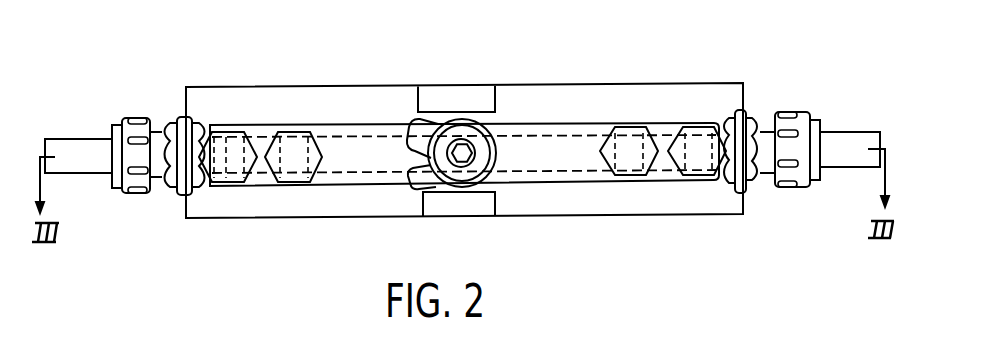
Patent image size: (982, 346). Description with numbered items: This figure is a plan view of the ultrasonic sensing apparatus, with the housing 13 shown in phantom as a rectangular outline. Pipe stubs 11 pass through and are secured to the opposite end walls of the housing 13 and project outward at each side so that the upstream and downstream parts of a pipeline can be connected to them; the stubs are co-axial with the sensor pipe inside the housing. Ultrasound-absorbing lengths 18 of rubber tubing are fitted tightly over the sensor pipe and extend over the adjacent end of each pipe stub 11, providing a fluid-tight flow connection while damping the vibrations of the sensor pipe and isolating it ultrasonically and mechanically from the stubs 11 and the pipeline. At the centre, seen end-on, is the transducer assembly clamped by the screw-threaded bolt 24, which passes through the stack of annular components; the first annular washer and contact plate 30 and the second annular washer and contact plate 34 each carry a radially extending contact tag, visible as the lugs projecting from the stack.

The pipe stub 11 is at (70, 139).
The housing 13 is at (322, 86).
The ultrasound-absorbing length of rubber tubing 18 is at (330, 186).
The screw-threaded bolt 24 is at (473, 148).
The first annular washer and contact plate 30 is at (417, 188).
The second annular washer and contact plate 34 is at (417, 118).